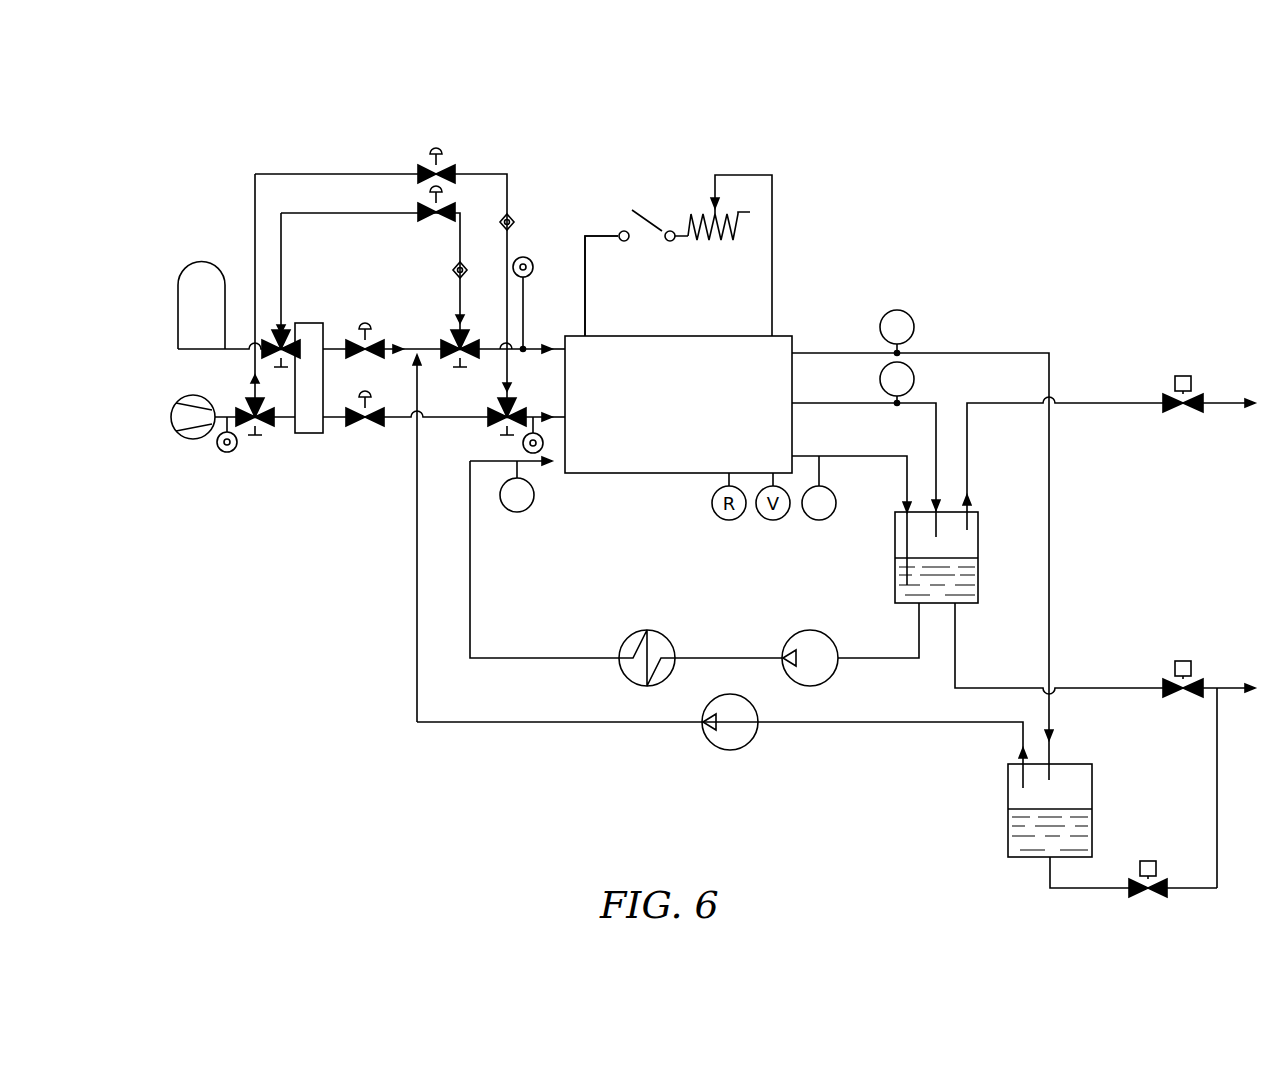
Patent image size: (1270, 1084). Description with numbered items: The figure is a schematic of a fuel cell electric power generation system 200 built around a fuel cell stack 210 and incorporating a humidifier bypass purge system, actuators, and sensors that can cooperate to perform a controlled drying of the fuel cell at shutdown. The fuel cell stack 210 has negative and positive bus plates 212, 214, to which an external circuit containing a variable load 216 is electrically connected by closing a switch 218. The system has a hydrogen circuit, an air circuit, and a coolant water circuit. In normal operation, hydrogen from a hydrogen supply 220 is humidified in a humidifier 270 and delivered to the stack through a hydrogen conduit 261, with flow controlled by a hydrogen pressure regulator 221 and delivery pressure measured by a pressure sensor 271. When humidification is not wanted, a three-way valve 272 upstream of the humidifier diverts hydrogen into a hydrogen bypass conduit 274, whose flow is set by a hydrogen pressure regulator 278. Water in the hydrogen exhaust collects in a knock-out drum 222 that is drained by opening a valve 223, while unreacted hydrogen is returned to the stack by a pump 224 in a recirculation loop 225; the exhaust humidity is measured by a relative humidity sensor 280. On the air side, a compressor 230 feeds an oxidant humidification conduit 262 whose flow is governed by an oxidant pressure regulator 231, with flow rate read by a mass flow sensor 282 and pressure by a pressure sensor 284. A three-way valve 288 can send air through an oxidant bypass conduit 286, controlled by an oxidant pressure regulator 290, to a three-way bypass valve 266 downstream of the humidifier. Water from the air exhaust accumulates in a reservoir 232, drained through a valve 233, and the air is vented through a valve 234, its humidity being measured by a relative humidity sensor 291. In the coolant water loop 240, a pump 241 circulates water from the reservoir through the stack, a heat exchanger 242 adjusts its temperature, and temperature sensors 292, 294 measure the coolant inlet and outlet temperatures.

The fuel cell electric power generation system 200 is at (990, 282).
The fuel cell stack 210 is at (703, 473).
The negative bus plate 212 is at (778, 310).
The positive bus plate 214 is at (580, 320).
The variable load 216 is at (457, 335).
The switch 218 is at (650, 225).
The hydrogen supply 220 is at (178, 349).
The hydrogen pressure regulator 221 is at (366, 318).
The knock-out drum 222 is at (1008, 826).
The valve 223 is at (1157, 865).
The pump 224 is at (750, 748).
The recirculation loop 225 is at (565, 722).
The compressor 230 is at (180, 402).
The oxidant pressure regulator 231 is at (372, 426).
The reservoir 232 is at (978, 558).
The valve 233 is at (1190, 661).
The valve 234 is at (1175, 383).
The coolant water loop 240 is at (755, 618).
The pump 241 is at (812, 630).
The heat exchanger 242 is at (667, 632).
The hydrogen conduit 261 is at (535, 346).
The oxidant humidification conduit 262 is at (536, 405).
The three-way bypass valve 266 is at (488, 415).
The humidifier 270 is at (310, 433).
The pressure sensor 271 is at (530, 257).
The three-way valve 272 is at (283, 318).
The hydrogen bypass conduit 274 is at (347, 213).
The hydrogen pressure regulator 278 is at (440, 207).
The relative humidity sensor 280 is at (908, 312).
The mass flow sensor 282 is at (217, 447).
The pressure sensor 284 is at (522, 444).
The oxidant bypass conduit 286 is at (337, 174).
The three-way valve 288 is at (255, 440).
The oxidant pressure regulator 290 is at (436, 150).
The relative humidity sensor 291 is at (915, 380).
The temperature sensor 292 is at (517, 512).
The temperature sensor 294 is at (833, 497).